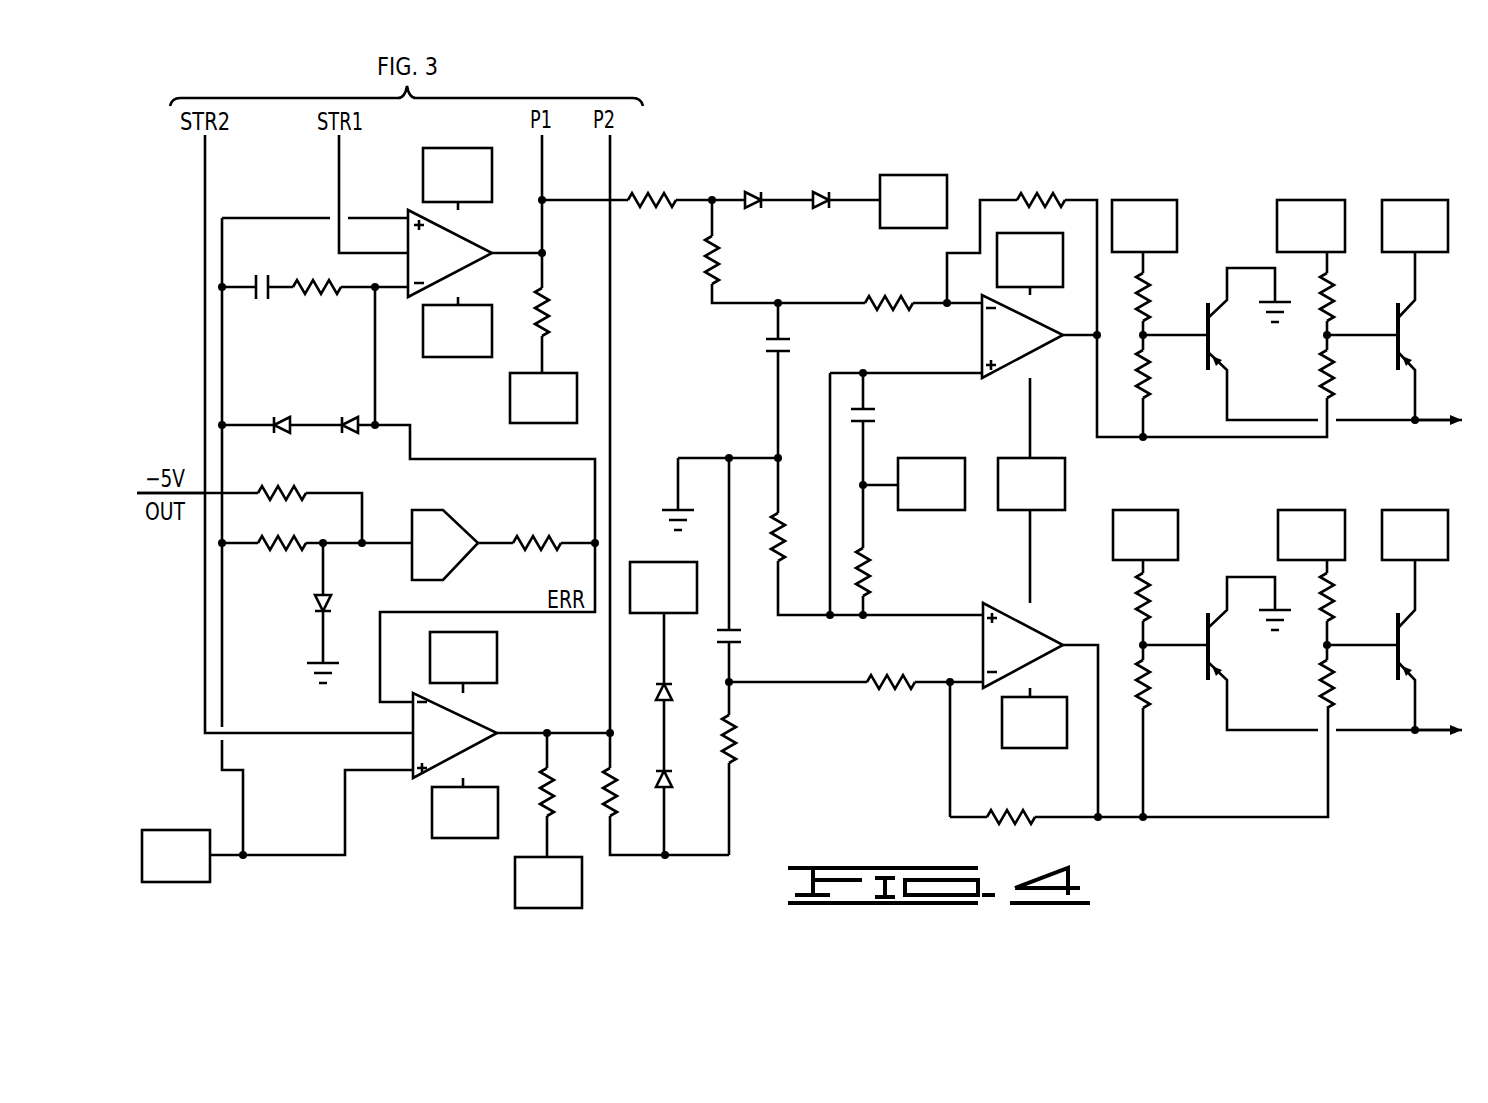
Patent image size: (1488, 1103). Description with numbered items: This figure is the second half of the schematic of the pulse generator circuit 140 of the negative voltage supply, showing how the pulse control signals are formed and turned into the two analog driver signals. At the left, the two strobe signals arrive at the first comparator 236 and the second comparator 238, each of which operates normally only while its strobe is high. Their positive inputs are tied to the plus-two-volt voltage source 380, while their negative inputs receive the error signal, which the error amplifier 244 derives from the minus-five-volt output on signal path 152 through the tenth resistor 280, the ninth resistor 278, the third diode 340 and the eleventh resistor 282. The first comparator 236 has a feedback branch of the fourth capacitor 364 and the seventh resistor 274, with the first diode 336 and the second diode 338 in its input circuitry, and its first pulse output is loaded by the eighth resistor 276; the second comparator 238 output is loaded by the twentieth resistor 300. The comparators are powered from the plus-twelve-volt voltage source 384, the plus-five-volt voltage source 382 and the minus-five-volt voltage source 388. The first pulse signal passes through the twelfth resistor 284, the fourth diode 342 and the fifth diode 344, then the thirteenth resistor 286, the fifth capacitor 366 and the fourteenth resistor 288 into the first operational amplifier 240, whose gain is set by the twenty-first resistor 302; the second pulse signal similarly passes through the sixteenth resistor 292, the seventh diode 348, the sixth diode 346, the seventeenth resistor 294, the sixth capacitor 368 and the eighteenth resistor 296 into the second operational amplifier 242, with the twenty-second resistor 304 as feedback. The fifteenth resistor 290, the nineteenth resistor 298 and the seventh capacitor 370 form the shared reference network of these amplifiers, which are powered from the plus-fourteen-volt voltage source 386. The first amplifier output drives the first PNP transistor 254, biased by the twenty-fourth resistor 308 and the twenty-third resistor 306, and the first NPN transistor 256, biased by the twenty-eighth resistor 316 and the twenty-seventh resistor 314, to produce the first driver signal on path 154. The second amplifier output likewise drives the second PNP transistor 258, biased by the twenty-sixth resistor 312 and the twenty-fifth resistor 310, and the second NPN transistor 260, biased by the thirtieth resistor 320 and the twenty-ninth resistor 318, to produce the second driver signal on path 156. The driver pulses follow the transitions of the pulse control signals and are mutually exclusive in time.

The pulse generator circuit 140 is at (1312, 102).
The signal path 152 is at (193, 500).
The path 154 is at (1440, 425).
The path 156 is at (1440, 735).
The X18 comparator 236 is at (410, 210).
The X19 comparator 238 is at (480, 720).
The X20 operational amplifier 240 is at (1013, 365).
The X21 operational amplifier 242 is at (1043, 632).
The X22 amplifier 244 is at (465, 568).
The Q1 transistor 254 is at (1218, 330).
The Q2 transistor 256 is at (1408, 342).
The Q3 transistor 258 is at (1222, 650).
The Q4 transistor 260 is at (1405, 655).
The R7 resistor 274 is at (325, 295).
The R8 resistor 276 is at (540, 292).
The R9 resistor 278 is at (305, 553).
The R10 resistor 280 is at (303, 492).
The R11 resistor 282 is at (555, 535).
The R12 resistor 284 is at (640, 205).
The R13 resistor 286 is at (708, 285).
The R14 resistor 288 is at (885, 312).
The R15 resistor 290 is at (779, 600).
The R16 resistor 292 is at (610, 770).
The R17 resistor 294 is at (738, 765).
The R18 resistor 296 is at (900, 690).
The R19 resistor 298 is at (870, 595).
The R20 resistor 300 is at (547, 816).
The R21 resistor 302 is at (1055, 198).
The R22 resistor 304 is at (1030, 813).
The R23 resistor 306 is at (1150, 397).
The R24 resistor 308 is at (1150, 283).
The R25 resistor 310 is at (1150, 708).
The R26 resistor 312 is at (1150, 590).
The R27 resistor 314 is at (1335, 397).
The R28 resistor 316 is at (1335, 283).
The R29 resistor 318 is at (1335, 708).
The R30 resistor 320 is at (1335, 600).
The D1 diode 336 is at (283, 433).
The D2 diode 338 is at (350, 433).
The D3 diode 340 is at (315, 612).
The D4 diode 342 is at (752, 207).
The D5 diode 344 is at (815, 195).
The D6 diode 346 is at (666, 770).
The D7 diode 348 is at (666, 684).
The C4 capacitor 364 is at (256, 280).
The C5 capacitor 366 is at (770, 355).
The C6 capacitor 368 is at (740, 645).
The C7 capacitor 370 is at (868, 409).
The +2V voltage source 380 is at (930, 175).
The +5V voltage source 382 is at (537, 423).
The +12V voltage source 384 is at (423, 352).
The +14V voltage source 386 is at (1065, 480).
The −5V voltage source 388 is at (468, 148).